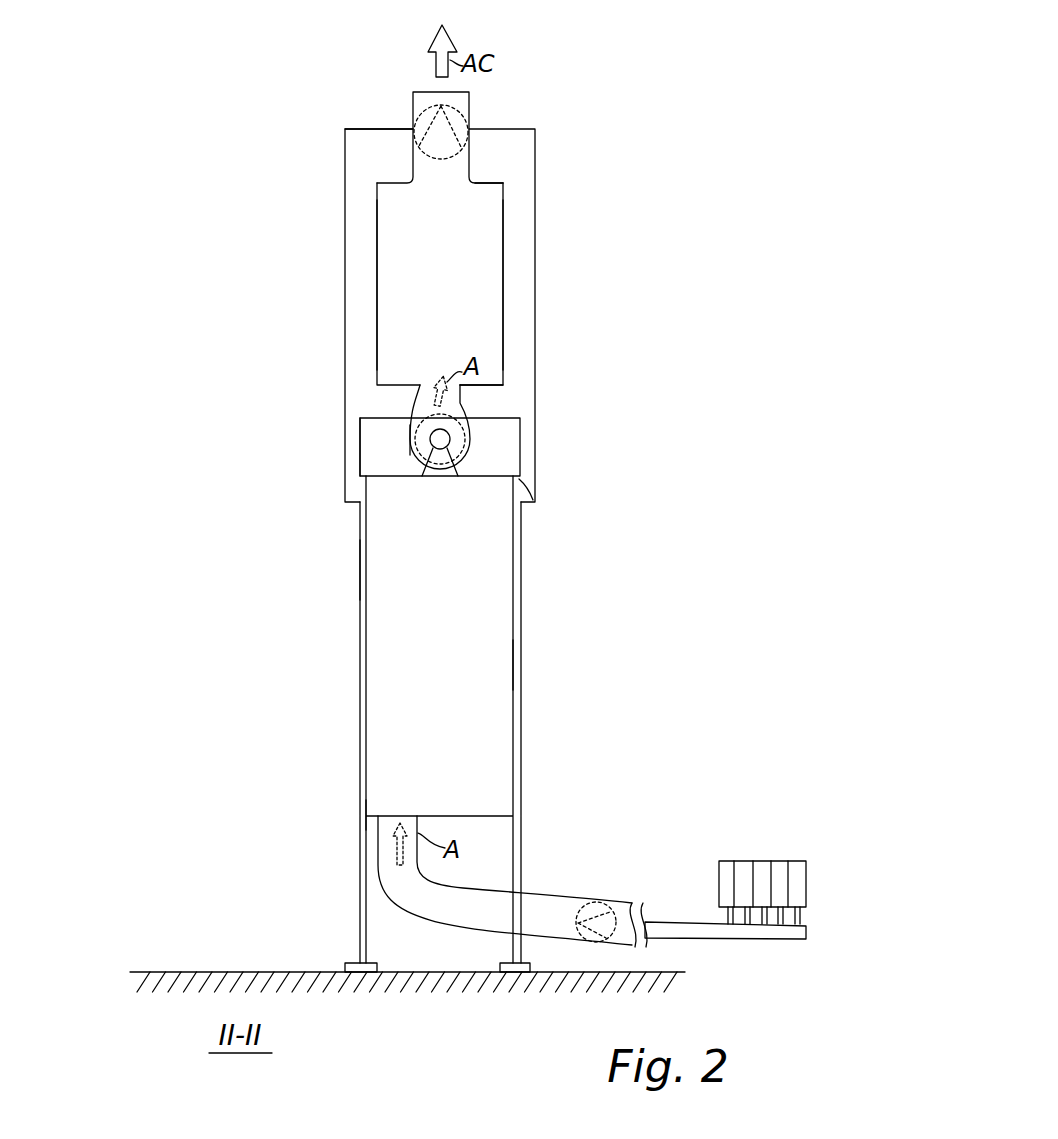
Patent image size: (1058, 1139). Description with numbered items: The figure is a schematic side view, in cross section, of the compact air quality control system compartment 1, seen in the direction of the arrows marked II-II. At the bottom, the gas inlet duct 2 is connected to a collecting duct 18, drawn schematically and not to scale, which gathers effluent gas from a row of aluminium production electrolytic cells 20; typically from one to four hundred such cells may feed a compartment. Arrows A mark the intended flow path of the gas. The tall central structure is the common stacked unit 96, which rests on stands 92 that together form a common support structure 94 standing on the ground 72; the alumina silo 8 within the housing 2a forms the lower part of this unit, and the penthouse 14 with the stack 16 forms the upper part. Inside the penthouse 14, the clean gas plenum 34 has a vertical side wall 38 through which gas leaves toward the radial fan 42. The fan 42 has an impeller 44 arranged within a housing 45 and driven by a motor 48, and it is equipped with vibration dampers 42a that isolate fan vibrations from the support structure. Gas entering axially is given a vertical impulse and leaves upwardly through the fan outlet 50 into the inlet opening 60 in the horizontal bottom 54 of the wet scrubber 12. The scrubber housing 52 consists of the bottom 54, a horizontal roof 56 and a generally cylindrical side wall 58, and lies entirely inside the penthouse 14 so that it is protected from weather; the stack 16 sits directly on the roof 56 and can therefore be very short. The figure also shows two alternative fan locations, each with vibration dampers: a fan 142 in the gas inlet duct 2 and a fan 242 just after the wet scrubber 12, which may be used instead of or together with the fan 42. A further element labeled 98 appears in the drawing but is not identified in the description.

The compact AQCS compartment 1 is at (676, 128).
The gas inlet duct 2 is at (397, 908).
The housing 2a is at (523, 667).
The alumina silo 8 is at (493, 567).
The wet scrubber 12 is at (512, 218).
The gas cleaning unit penthouse 14 is at (345, 187).
The stack 16 is at (472, 106).
The collecting duct 18 is at (676, 923).
The aluminium production electrolytic cells 20 is at (729, 861).
The clean gas plenum 34 is at (520, 436).
The vertical side wall 38 is at (505, 453).
The radial fan 42 is at (400, 444).
The vibration dampers 42a is at (536, 496).
The impeller 44 is at (413, 408).
The housing 45 is at (408, 430).
The motor 48 is at (452, 441).
The fan outlet 50 is at (421, 400).
The housing 52 is at (512, 272).
The horizontal bottom 54 is at (492, 396).
The horizontal roof 56 is at (487, 183).
The cylindrical side wall 58 is at (378, 265).
The inlet opening 60 is at (434, 386).
The ground 72 is at (255, 972).
The stands 92 is at (359, 868).
The common support structure 94 is at (344, 823).
The common stacked unit 96 is at (360, 563).
The housing top 98 is at (356, 126).
The fan 142 is at (596, 904).
The fan 242 is at (422, 111).